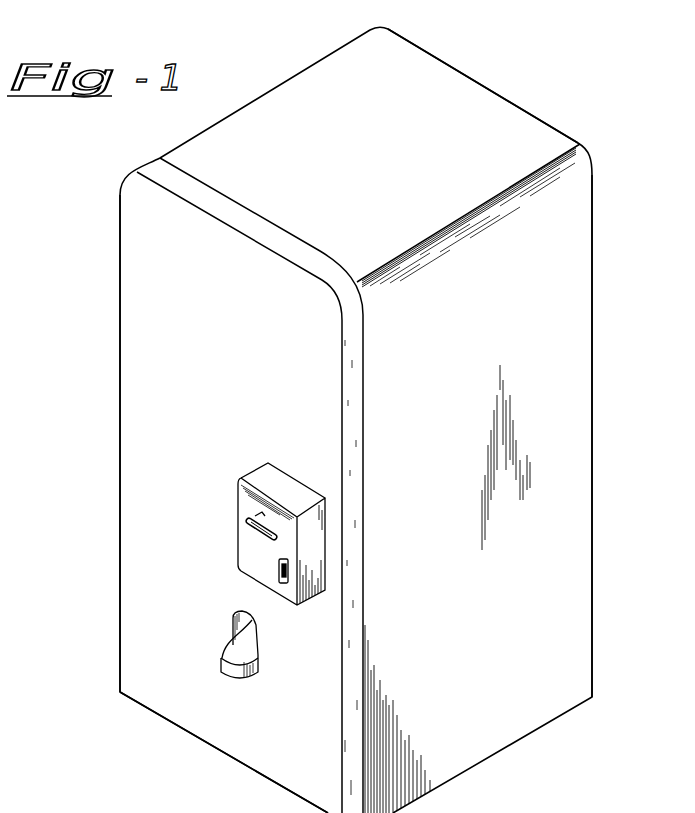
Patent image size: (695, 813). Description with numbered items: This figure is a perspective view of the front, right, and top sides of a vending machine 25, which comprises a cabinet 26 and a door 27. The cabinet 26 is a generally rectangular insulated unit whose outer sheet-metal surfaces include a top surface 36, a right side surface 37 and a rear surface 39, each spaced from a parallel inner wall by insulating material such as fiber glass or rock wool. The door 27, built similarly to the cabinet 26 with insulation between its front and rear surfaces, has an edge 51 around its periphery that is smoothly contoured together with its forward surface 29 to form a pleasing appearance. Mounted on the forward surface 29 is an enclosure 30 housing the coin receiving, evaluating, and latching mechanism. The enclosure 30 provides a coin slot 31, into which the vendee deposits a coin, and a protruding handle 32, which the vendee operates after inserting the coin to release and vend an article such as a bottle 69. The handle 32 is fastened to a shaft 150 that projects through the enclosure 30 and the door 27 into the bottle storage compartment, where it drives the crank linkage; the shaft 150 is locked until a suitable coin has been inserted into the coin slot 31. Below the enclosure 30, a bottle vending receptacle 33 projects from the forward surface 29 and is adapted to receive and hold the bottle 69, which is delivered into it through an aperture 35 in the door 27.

The vending machine 25 is at (520, 100).
The cabinet 26 is at (560, 340).
The door 27 is at (137, 258).
The forward surface 29 is at (245, 352).
The enclosure 30 is at (260, 482).
The coin slot 31 is at (287, 585).
The handle 32 is at (252, 532).
The bottle vending receptacle 33 is at (233, 674).
The aperture 35 is at (232, 622).
The top surface 36 is at (457, 90).
The right side surface 37 is at (565, 584).
The rear surface 39 is at (193, 804).
The edge 51 is at (243, 216).
The bottle 69 is at (236, 658).
The shaft 150 is at (258, 517).